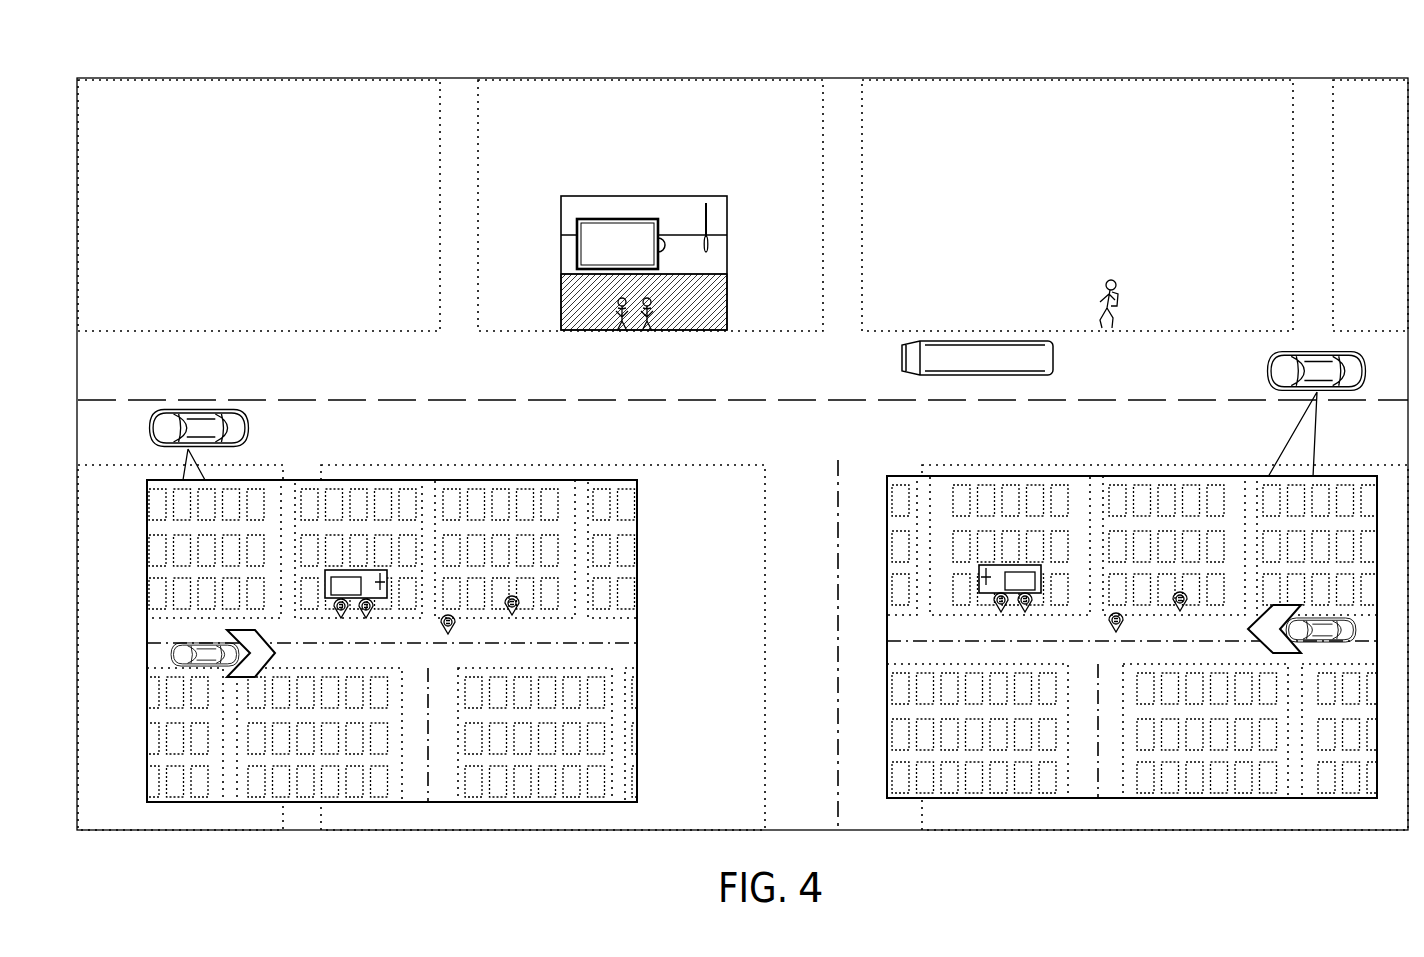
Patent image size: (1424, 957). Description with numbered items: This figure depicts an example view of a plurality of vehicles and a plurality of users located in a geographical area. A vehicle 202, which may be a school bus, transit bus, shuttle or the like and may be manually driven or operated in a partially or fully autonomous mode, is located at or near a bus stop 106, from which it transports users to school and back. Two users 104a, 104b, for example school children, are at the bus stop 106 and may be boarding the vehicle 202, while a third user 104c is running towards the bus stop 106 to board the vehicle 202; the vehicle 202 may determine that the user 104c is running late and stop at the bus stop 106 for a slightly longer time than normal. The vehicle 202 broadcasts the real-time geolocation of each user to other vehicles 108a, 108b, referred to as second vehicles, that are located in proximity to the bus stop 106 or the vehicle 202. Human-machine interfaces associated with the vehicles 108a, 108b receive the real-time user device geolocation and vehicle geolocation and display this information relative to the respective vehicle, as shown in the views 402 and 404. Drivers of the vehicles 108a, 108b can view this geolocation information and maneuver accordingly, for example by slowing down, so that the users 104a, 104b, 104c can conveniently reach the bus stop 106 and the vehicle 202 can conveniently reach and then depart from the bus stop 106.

The bus stop 106 is at (623, 238).
The user 104a is at (620, 331).
The user 104b is at (647, 331).
The user 104c is at (1111, 328).
The vehicle 202 is at (900, 357).
The second vehicle 108a is at (1267, 372).
The second vehicle 108b is at (250, 427).
The view 402 is at (947, 477).
The view 404 is at (583, 480).